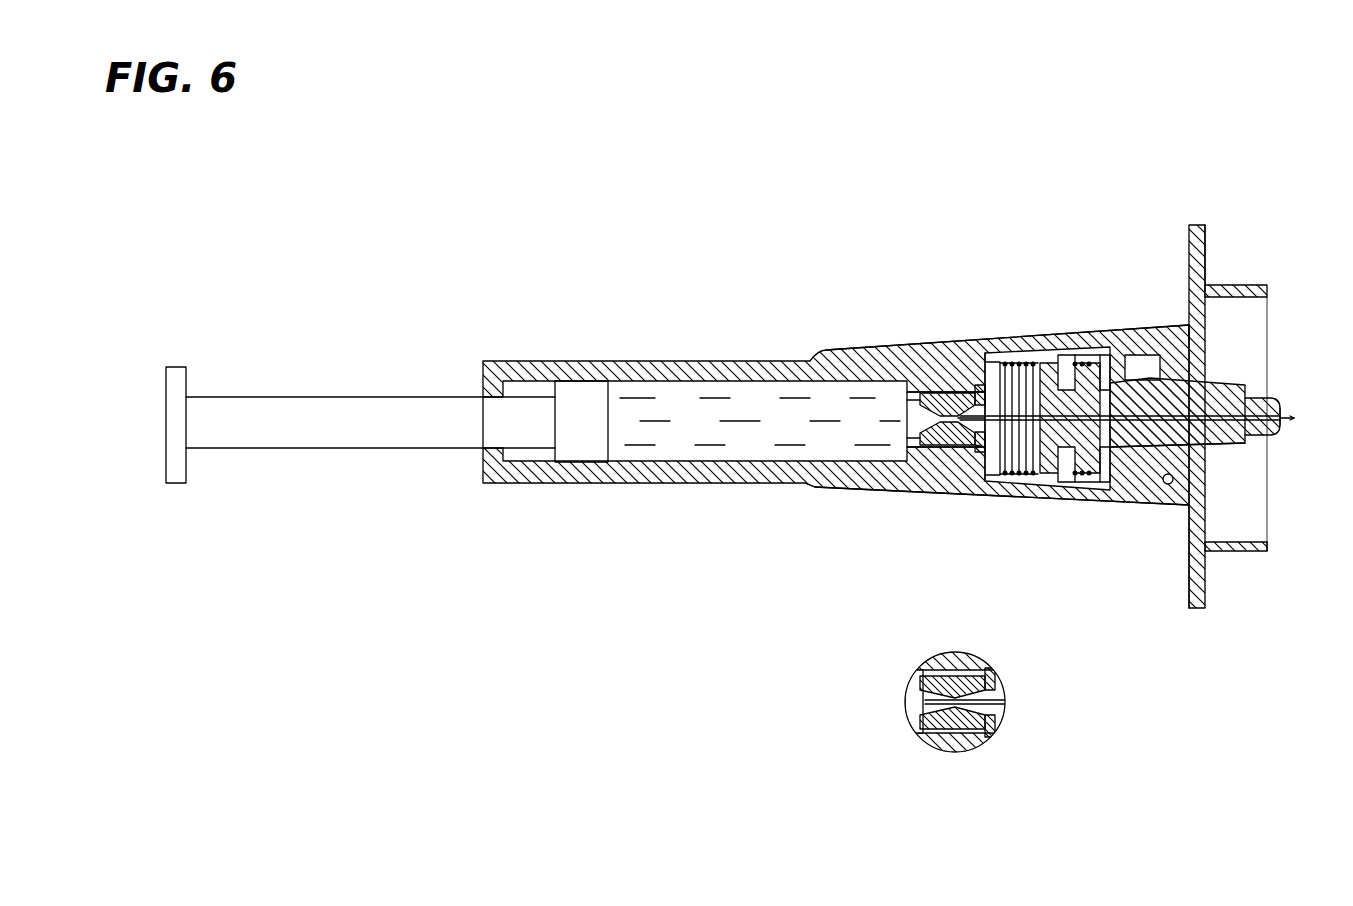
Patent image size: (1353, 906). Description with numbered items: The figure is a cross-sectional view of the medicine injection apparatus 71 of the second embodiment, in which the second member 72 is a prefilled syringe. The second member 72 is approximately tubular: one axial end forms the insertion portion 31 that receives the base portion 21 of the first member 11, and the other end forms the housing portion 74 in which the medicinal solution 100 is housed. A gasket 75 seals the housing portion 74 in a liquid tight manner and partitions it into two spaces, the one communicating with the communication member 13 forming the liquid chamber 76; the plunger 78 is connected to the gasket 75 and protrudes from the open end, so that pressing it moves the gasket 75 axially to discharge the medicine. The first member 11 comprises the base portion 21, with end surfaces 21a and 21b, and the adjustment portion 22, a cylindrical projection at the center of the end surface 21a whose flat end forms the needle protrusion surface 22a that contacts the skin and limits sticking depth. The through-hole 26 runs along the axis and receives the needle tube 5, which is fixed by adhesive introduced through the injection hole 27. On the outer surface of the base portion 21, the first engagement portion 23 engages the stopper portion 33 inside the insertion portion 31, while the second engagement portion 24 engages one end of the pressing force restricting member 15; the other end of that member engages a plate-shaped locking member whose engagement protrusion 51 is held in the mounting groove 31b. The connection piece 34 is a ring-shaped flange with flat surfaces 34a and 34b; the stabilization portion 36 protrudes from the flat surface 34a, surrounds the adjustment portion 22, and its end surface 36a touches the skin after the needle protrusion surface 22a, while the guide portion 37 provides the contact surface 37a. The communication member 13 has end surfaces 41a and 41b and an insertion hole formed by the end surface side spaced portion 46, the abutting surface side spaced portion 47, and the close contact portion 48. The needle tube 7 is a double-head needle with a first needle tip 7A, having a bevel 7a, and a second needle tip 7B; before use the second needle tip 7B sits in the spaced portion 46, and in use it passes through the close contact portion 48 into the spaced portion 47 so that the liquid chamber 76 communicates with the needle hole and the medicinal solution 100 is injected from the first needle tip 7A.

The medicine injection apparatus 71 is at (1268, 126).
The second member 72 is at (848, 336).
The housing portion 74 is at (696, 484).
The gasket 75 is at (583, 392).
The liquid chamber 76 is at (812, 484).
The plunger 78 is at (340, 405).
The medicinal solution 100 is at (668, 396).
The needle tube 7 is at (995, 690).
The bevel 7a is at (1292, 414).
The first needle tip 7A is at (1296, 428).
The second needle tip 7B is at (948, 364).
The needle tube 5 is at (1247, 396).
The first member 11 is at (1149, 429).
The communication member 13 is at (938, 470).
The pressing force restricting member 15 is at (1037, 472).
The base portion 21 is at (1216, 447).
The end surface 21a is at (1232, 450).
The end surface 21b is at (1043, 355).
The adjustment portion 22 is at (1260, 436).
The needle protrusion surface 22a is at (1280, 427).
The first engagement portion 23 is at (1127, 354).
The second engagement portion 24 is at (1092, 360).
The through-hole 26 is at (1130, 480).
The injection hole 27 is at (1101, 482).
The insertion portion 31 is at (1060, 480).
The mounting groove 31b is at (990, 484).
The stopper portion 33 is at (1170, 486).
The connection piece 34 is at (1189, 552).
The flat surface 34a is at (1250, 298).
The flat surface 34b is at (1189, 322).
The stabilization portion 36 is at (1240, 552).
The end surface 36a is at (1268, 548).
The guide portion 37 is at (1190, 228).
The contact surface 37a is at (1205, 255).
The end surface 41a is at (993, 354).
The end surface 41b is at (918, 458).
The end surface side spaced portion 46 is at (962, 462).
The abutting surface side spaced portion 47 is at (890, 446).
The close contact portion 48 is at (918, 390).
The engagement protrusion 51 is at (970, 356).